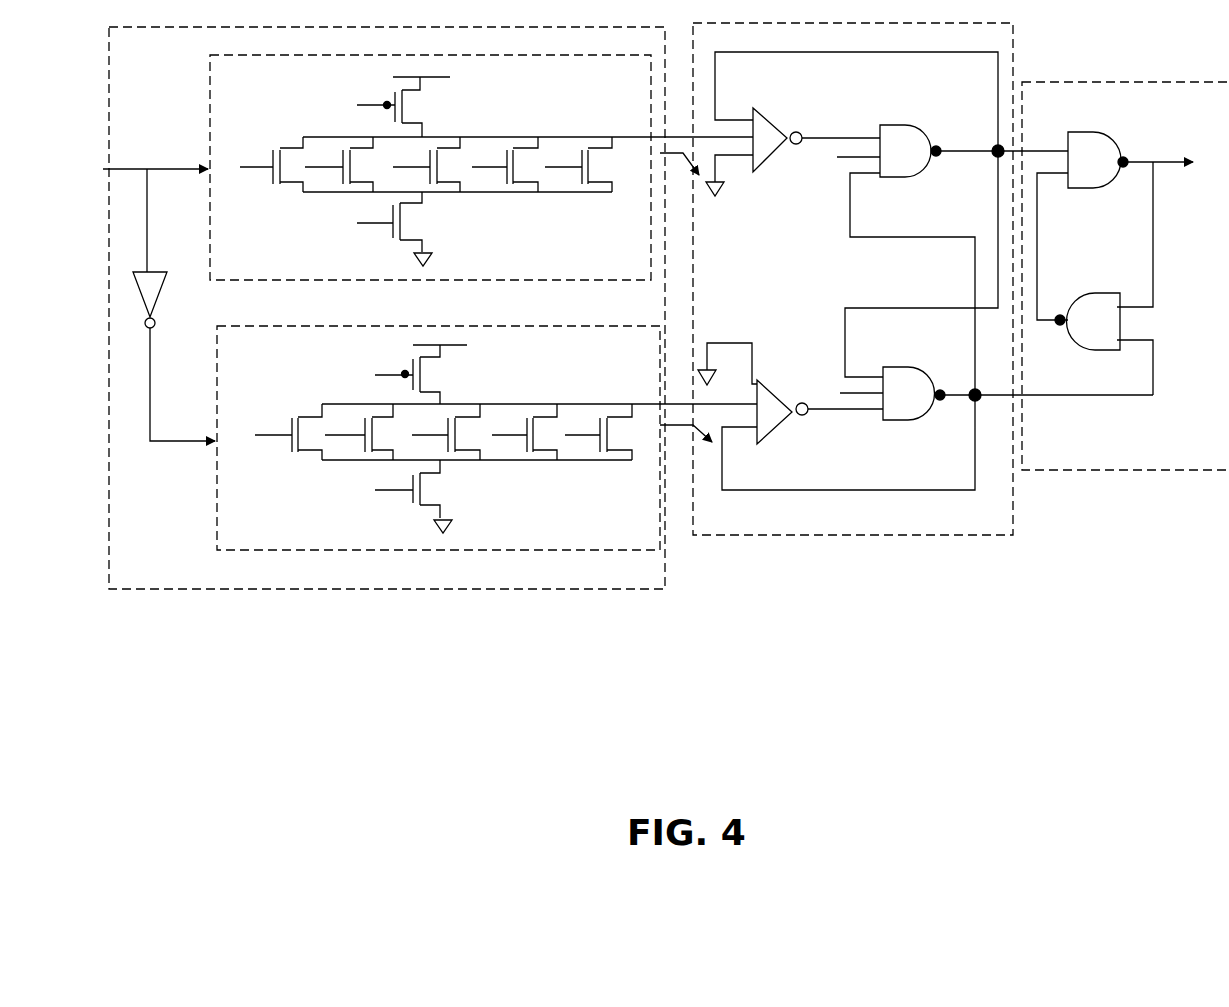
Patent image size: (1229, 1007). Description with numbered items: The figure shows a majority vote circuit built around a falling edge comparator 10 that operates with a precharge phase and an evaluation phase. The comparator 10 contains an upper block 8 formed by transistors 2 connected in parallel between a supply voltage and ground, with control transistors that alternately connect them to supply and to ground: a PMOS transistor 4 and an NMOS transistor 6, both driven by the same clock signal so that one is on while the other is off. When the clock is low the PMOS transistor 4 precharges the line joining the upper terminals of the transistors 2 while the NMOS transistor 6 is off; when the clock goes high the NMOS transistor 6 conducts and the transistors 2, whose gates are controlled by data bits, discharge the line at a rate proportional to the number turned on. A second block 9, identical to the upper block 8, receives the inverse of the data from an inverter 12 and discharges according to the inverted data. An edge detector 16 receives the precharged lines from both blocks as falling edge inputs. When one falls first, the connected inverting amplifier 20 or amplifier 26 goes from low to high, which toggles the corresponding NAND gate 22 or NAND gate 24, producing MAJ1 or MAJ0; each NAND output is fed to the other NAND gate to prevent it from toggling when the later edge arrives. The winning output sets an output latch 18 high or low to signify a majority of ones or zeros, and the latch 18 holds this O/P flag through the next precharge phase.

The transistors 2 is at (566, 122).
The PMOS transistor 4 is at (381, 80).
The NMOS transistor 6 is at (438, 230).
The upper block 8 is at (481, 167).
The second block 9 is at (487, 438).
The falling edge comparator 10 is at (430, 308).
The inverter 12 is at (158, 290).
The edge detector 16 is at (923, 279).
The output latch 18 is at (1113, 276).
The amplifier 20 is at (760, 122).
The NAND gate 22 is at (888, 124).
The NAND gate 24 is at (890, 372).
The amplifier 26 is at (765, 398).